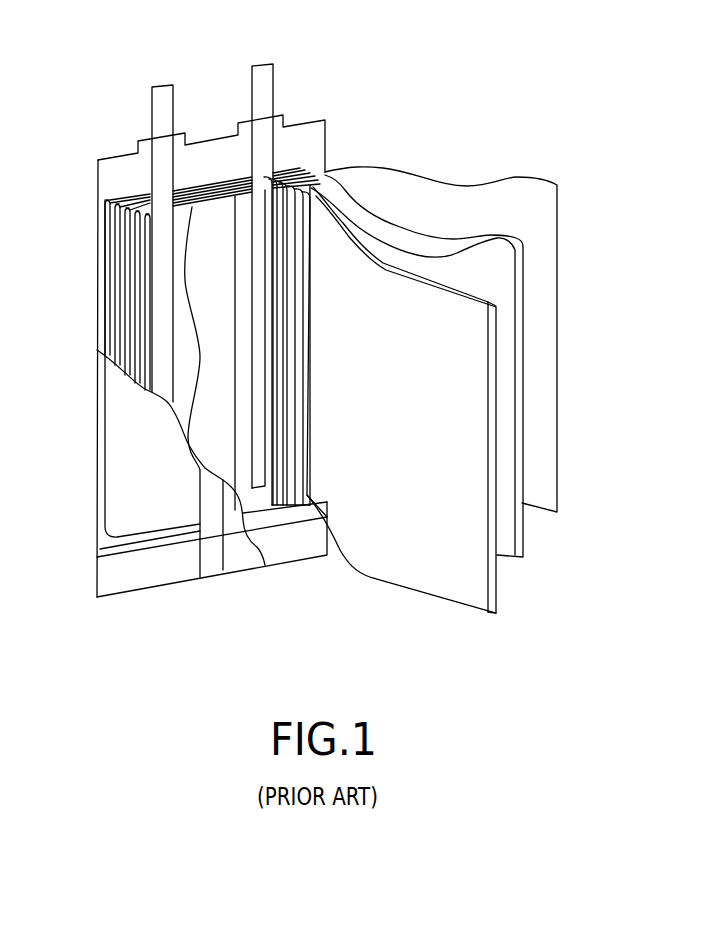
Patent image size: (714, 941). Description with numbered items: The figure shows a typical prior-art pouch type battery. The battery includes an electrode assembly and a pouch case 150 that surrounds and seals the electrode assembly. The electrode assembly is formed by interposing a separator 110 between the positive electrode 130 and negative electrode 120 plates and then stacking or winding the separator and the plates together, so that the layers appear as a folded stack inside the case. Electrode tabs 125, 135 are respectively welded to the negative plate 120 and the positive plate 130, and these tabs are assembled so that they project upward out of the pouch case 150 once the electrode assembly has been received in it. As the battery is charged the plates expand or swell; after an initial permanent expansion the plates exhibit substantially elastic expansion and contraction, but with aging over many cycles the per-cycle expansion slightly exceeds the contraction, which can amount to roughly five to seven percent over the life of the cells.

The separator 110 is at (440, 266).
The negative electrode plate 120 is at (493, 438).
The electrode tab 125 is at (260, 69).
The positive electrode plate 130 is at (520, 290).
The electrode tab 135 is at (162, 88).
The pouch case 150 is at (118, 498).